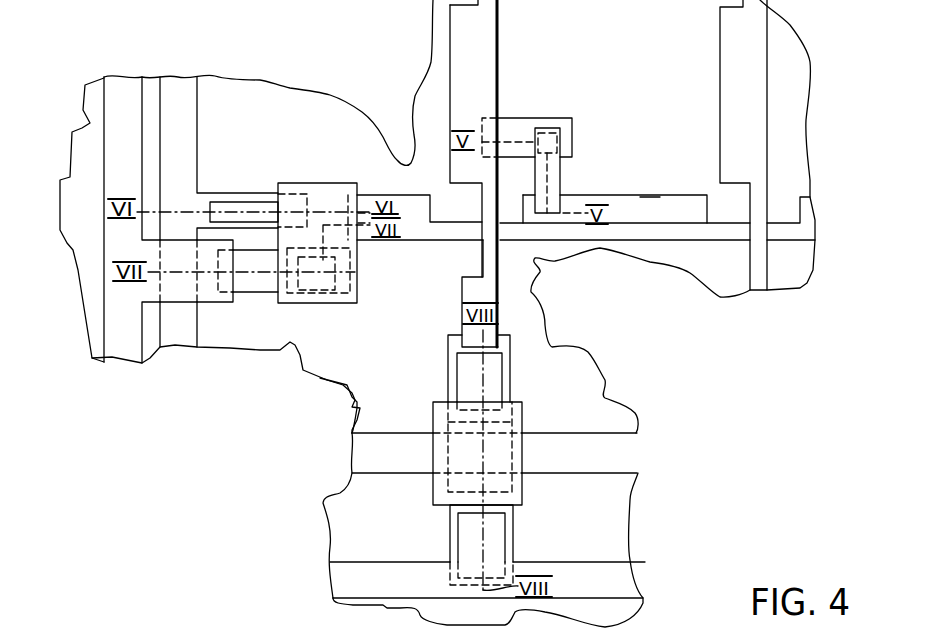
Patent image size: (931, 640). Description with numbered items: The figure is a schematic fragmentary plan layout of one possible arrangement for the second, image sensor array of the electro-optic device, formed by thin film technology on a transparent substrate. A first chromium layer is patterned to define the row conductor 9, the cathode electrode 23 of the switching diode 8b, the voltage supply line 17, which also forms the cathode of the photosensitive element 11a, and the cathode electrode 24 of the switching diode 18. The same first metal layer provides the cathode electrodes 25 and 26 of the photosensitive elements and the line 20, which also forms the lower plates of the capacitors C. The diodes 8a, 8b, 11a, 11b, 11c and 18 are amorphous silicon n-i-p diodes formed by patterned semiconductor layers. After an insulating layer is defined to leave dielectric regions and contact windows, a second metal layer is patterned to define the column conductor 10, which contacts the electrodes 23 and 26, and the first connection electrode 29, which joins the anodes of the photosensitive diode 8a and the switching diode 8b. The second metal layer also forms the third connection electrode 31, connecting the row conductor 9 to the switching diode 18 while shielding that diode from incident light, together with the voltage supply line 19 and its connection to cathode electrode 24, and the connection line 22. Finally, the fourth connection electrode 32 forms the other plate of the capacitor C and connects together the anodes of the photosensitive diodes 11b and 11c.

The voltage supply line 17 is at (188, 137).
The voltage supply line 19 is at (125, 343).
The photosensitive element 11a is at (258, 207).
The third connection electrode 31 is at (338, 191).
The cathode electrode 24 is at (255, 283).
The switching diode 18 is at (318, 280).
The column conductor 10 is at (478, 38).
The row conductor 9 is at (413, 227).
The cathode electrode 23 is at (513, 132).
The first connection electrode 29 is at (553, 168).
The switching diode 8b is at (560, 127).
The photosensitive diode 8a is at (647, 197).
The cathode electrode 26 is at (502, 352).
The photosensitive diode 11b is at (495, 378).
The fourth connection electrode 32 is at (522, 485).
The line 20 is at (620, 453).
The capacitor C is at (507, 450).
The cathode electrode 25 is at (457, 510).
The photosensitive diode 11c is at (493, 537).
The connection line 22 is at (623, 580).